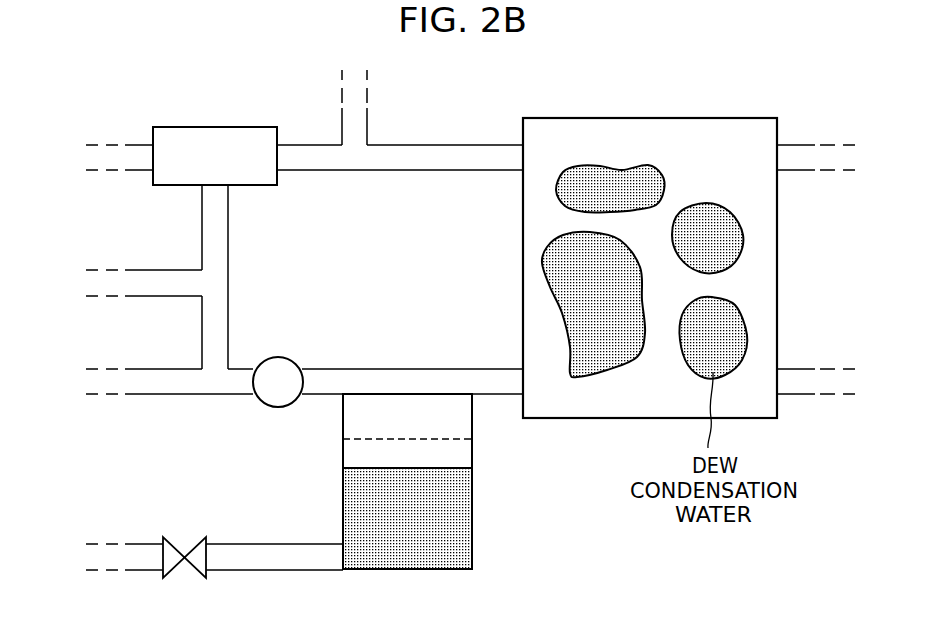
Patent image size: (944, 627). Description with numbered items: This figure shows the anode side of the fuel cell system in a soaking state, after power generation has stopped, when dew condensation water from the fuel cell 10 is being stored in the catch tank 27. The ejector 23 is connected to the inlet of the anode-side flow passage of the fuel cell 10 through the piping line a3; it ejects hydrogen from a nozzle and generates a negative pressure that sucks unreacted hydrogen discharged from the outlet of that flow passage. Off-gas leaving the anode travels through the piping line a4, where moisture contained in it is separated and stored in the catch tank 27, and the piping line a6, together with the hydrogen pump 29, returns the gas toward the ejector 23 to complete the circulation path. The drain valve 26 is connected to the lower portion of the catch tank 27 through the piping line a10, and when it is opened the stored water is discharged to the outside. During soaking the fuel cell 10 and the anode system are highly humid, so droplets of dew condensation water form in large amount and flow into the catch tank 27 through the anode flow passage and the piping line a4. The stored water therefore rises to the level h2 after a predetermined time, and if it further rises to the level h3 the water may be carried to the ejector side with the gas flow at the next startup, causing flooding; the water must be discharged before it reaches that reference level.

The fuel cell 10 is at (633, 117).
The ejector 23 is at (233, 126).
The drain valve 26 is at (175, 541).
The catch tank 27 is at (472, 549).
The hydrogen pump 29 is at (279, 357).
The piping line a3 is at (419, 142).
The piping line a4 is at (443, 368).
The piping line a6 is at (228, 253).
The piping line a10 is at (270, 542).
The water level h2 is at (472, 468).
The water level h3 is at (472, 439).